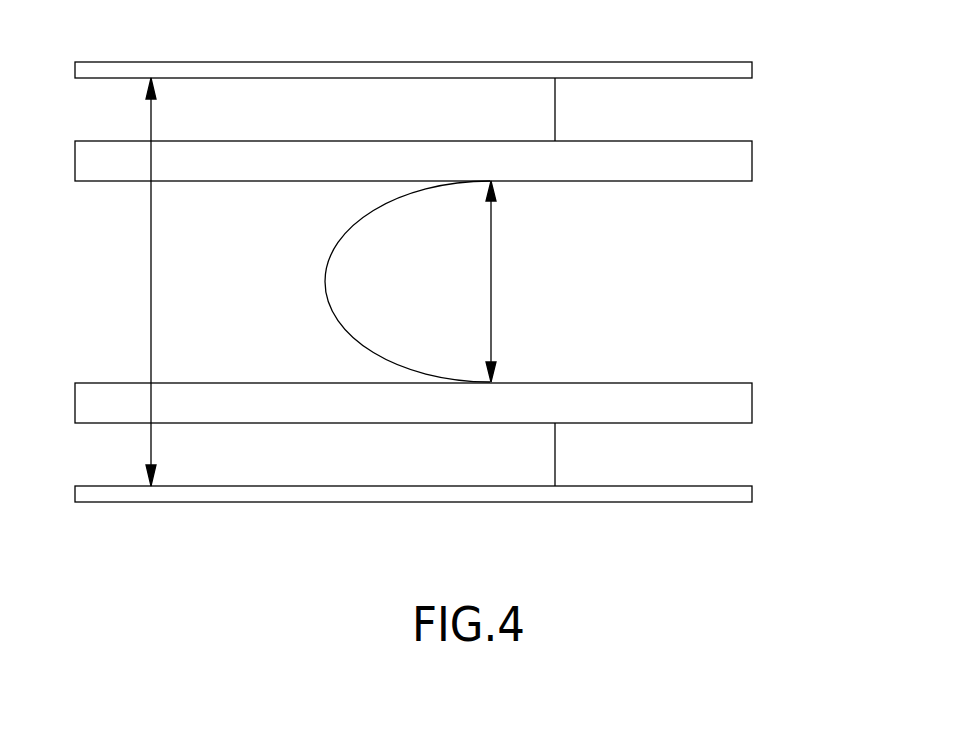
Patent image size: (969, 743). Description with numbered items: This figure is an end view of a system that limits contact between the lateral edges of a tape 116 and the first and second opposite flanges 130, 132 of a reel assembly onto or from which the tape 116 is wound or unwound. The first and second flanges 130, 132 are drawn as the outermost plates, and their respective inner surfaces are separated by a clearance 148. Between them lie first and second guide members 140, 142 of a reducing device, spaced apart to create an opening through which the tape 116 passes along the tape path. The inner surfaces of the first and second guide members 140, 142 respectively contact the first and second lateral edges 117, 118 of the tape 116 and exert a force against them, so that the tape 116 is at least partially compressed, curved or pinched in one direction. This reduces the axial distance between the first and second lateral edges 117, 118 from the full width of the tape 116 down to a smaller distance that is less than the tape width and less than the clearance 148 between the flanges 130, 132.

The first flange 130 is at (738, 69).
The first guide member 140 is at (738, 157).
The second guide member 142 is at (736, 400).
The second flange 132 is at (736, 494).
The first lateral edge 117 is at (553, 79).
The second lateral edge 118 is at (553, 486).
The tape 116 is at (325, 285).
The clearance 148 is at (151, 112).